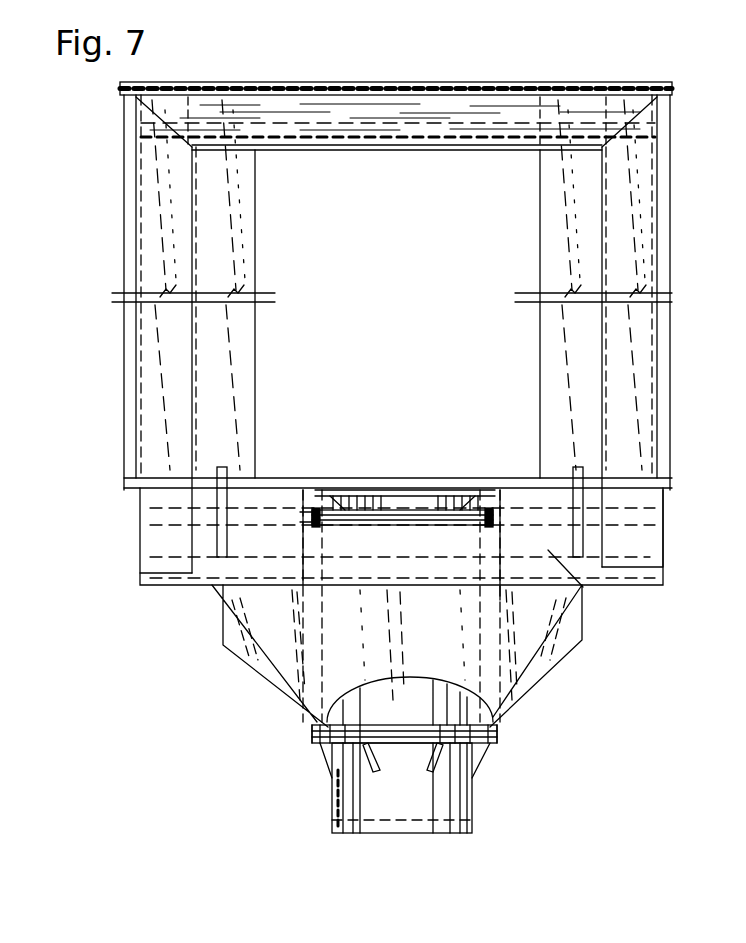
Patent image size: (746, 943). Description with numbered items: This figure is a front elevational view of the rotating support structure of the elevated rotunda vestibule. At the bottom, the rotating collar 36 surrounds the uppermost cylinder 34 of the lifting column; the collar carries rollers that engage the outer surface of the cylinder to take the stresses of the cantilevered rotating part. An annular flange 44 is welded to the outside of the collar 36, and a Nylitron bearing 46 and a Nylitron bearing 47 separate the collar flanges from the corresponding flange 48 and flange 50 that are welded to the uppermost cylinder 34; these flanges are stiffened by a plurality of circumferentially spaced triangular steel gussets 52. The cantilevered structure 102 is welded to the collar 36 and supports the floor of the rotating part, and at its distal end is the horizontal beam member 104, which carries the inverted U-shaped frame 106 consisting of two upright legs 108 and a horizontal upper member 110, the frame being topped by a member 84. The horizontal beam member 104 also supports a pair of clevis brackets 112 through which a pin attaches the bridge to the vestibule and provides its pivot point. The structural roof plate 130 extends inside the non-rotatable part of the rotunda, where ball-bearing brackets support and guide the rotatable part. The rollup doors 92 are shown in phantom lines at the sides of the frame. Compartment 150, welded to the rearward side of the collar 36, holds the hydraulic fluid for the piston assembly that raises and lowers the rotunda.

The uppermost cylinder 34 is at (450, 800).
The rotating collar 36 is at (375, 715).
The annular flange 44 is at (497, 727).
The Nylitron bearing 46 is at (310, 520).
The Nylitron bearing 47 is at (497, 736).
The flange 48 is at (319, 513).
The flange 50 is at (420, 518).
The triangular steel gussets 52 is at (467, 485).
The top plate 84 is at (550, 85).
The rollup doors 92 is at (122, 177).
The cantilevered structure 102 is at (536, 613).
The horizontal beam member 104 is at (583, 587).
The inverted U-shaped frame 106 is at (431, 108).
The upright legs 108 is at (152, 238).
The horizontal upper member 110 is at (338, 88).
The clevis brackets 112 is at (223, 467).
The structural roof plate 130 is at (482, 147).
The compartment 150 is at (543, 675).